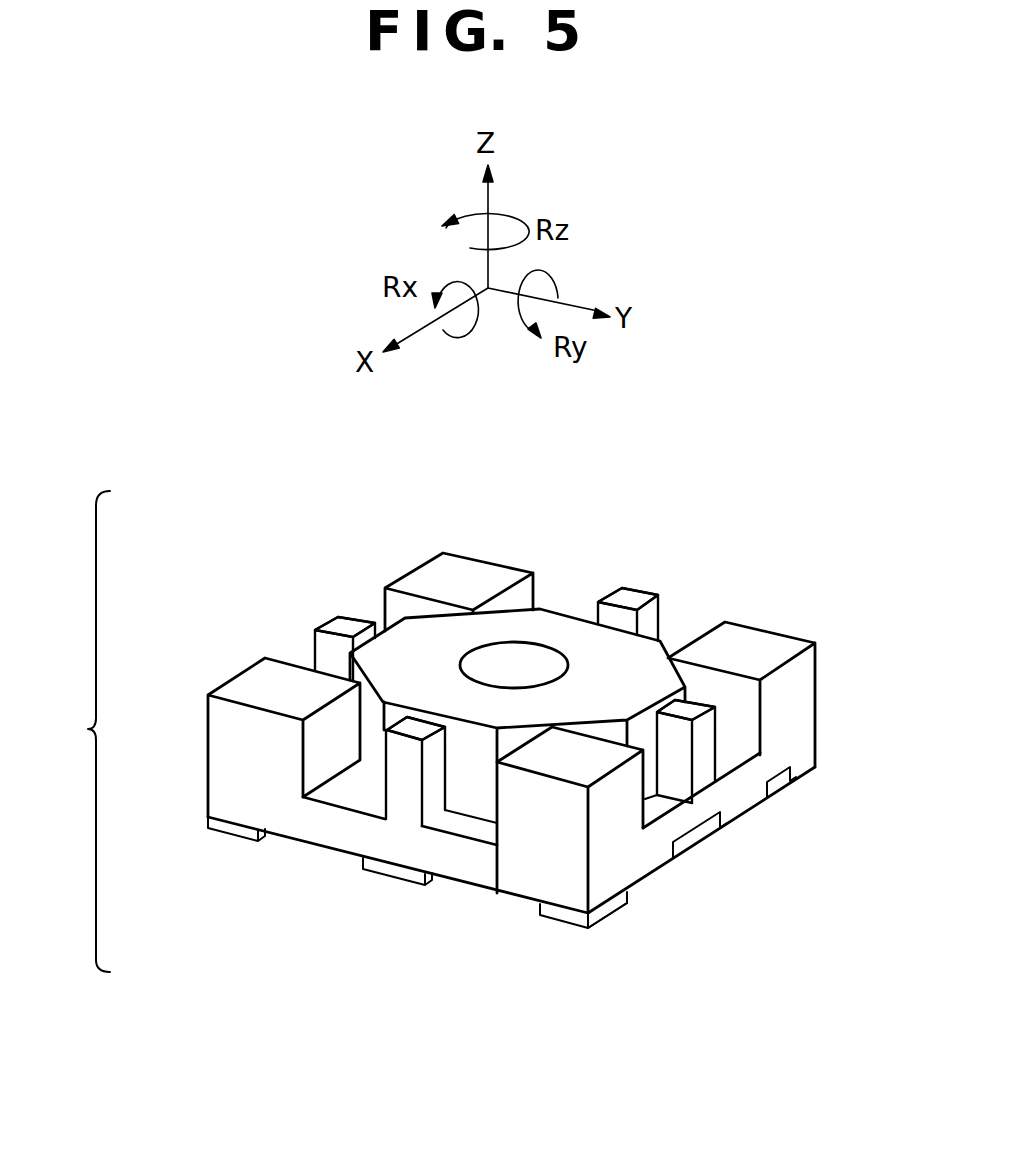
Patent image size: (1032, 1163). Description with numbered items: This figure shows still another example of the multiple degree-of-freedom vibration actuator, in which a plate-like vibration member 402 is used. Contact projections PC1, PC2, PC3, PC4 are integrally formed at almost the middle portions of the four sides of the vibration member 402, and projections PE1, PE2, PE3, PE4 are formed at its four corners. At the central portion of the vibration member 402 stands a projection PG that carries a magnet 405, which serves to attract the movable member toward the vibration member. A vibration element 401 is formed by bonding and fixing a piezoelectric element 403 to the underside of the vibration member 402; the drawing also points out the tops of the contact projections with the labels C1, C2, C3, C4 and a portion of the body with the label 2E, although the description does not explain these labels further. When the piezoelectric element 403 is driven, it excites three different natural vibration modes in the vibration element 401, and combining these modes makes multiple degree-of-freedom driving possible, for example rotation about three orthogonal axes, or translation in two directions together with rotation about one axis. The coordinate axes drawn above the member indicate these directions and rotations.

The vibration element 401 is at (70, 731).
The plate-like vibration member 402 is at (815, 706).
The piezoelectric element 403 is at (227, 832).
The magnet 405 is at (520, 657).
The projection PG is at (556, 622).
The projection PE1 is at (530, 835).
The projection PE2 is at (797, 642).
The projection PE3 is at (440, 565).
The projection PE4 is at (211, 760).
The contact projection PC1 is at (410, 800).
The contact projection PC2 is at (705, 773).
The contact projection PC3 is at (657, 614).
The contact projection PC4 is at (312, 638).
The contact cap C1 is at (405, 730).
The contact cap C2 is at (697, 712).
The contact cap C3 is at (622, 592).
The contact cap C4 is at (340, 624).
The electrode 2E is at (603, 886).